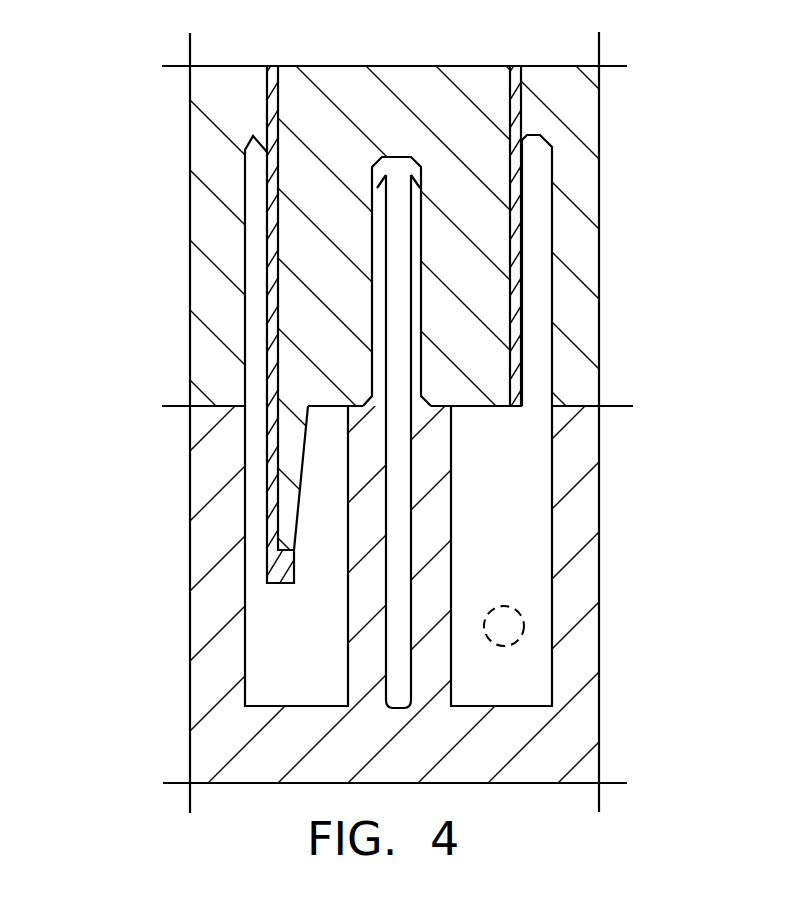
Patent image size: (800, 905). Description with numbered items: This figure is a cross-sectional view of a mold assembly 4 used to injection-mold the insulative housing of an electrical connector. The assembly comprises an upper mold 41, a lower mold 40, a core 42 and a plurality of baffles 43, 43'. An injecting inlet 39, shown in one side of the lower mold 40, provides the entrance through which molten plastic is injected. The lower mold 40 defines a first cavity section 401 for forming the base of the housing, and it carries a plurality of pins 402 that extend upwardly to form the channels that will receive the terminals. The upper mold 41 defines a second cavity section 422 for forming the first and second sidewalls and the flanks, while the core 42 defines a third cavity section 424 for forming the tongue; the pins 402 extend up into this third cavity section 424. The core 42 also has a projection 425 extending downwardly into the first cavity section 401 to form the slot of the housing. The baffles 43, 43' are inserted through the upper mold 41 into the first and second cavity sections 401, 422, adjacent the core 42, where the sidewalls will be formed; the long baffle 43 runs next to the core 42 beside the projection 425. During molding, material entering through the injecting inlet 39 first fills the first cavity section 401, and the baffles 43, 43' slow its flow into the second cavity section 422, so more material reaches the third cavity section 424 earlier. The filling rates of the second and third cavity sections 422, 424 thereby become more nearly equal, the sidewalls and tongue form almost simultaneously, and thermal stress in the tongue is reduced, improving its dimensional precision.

The mold assembly 4 is at (710, 195).
The injecting inlet 39 is at (507, 625).
The lower mold 40 is at (237, 731).
The upper mold 41 is at (220, 159).
The core 42 is at (480, 127).
The baffle 43 is at (250, 315).
The baffle 43' is at (594, 245).
The first cavity section 401 is at (512, 677).
The pin 402 is at (372, 277).
The second cavity section 422 is at (537, 365).
The third cavity section 424 is at (397, 232).
The projection 425 is at (290, 487).